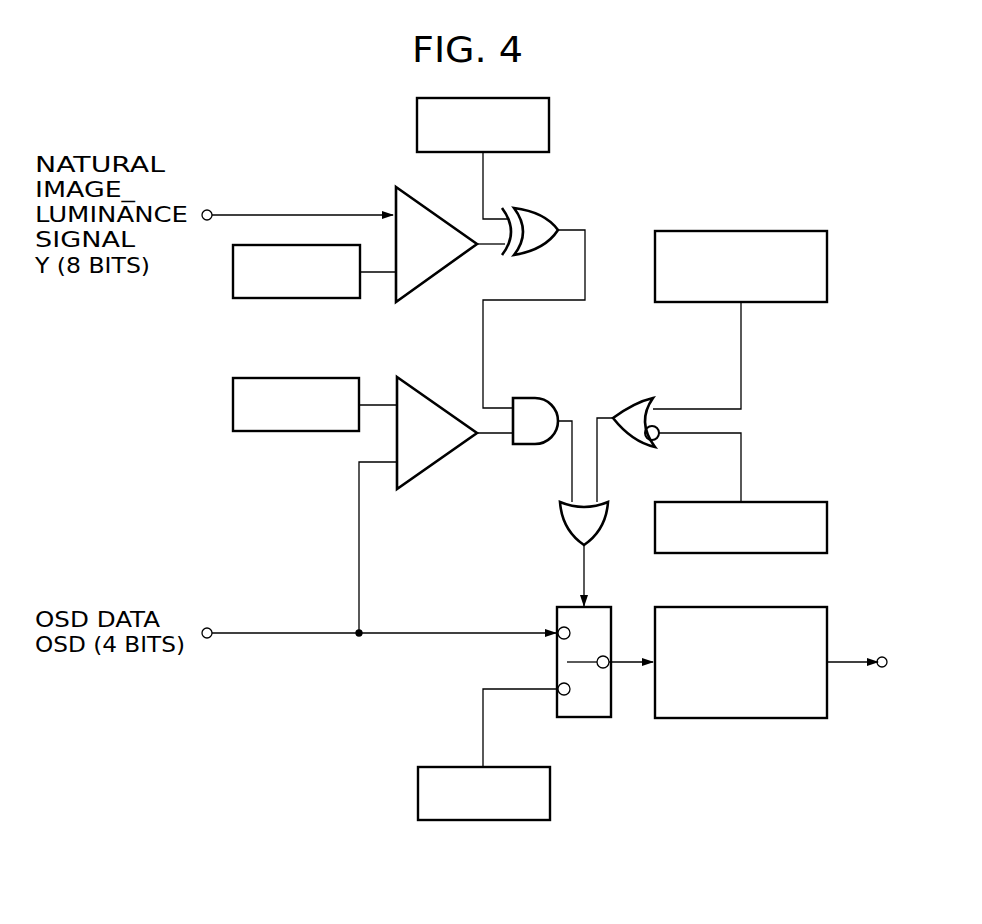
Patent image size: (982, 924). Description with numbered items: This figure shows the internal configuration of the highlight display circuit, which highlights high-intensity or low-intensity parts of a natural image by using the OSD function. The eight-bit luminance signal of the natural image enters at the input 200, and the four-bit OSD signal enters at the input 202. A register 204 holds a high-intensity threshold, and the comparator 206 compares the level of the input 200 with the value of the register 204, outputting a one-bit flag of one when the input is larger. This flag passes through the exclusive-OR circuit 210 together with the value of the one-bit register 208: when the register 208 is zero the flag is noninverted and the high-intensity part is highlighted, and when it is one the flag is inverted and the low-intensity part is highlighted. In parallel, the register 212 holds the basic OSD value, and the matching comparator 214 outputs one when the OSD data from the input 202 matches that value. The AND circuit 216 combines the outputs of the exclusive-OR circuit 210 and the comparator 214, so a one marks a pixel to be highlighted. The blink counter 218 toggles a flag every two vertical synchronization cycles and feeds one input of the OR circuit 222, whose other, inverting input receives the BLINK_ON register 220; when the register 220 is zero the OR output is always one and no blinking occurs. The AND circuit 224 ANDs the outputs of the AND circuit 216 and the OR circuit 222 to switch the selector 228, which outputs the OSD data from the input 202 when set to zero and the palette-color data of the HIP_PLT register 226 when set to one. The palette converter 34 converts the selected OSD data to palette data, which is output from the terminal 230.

The luminance signal input 200 is at (207, 210).
The OSD signal input 202 is at (207, 628).
The threshold register 204 is at (256, 299).
The comparator 206 is at (418, 290).
The inversion register 208 is at (416, 124).
The exclusive-OR circuit 210 is at (546, 218).
The basic OSD value register 212 is at (256, 432).
The matching comparator 214 is at (413, 480).
The AND circuit 216 is at (548, 398).
The blink counter 218 is at (787, 230).
The BLINK_ON register 220 is at (787, 501).
The OR circuit 222 is at (617, 408).
The AND circuit 224 is at (566, 532).
The HIP_PLT register 226 is at (417, 796).
The selector 228 is at (598, 718).
The palette converter 34 is at (789, 719).
The output terminal 230 is at (881, 656).